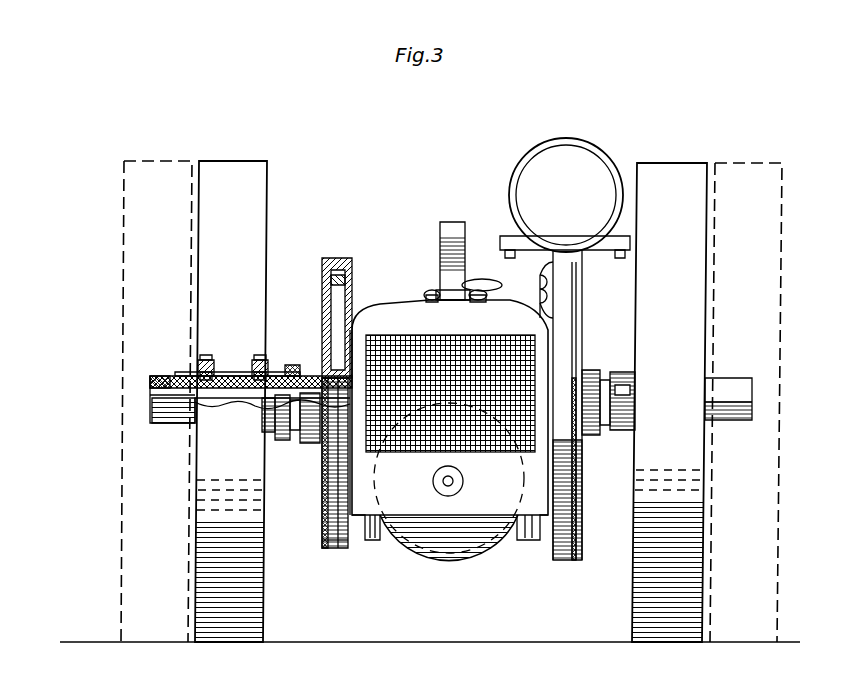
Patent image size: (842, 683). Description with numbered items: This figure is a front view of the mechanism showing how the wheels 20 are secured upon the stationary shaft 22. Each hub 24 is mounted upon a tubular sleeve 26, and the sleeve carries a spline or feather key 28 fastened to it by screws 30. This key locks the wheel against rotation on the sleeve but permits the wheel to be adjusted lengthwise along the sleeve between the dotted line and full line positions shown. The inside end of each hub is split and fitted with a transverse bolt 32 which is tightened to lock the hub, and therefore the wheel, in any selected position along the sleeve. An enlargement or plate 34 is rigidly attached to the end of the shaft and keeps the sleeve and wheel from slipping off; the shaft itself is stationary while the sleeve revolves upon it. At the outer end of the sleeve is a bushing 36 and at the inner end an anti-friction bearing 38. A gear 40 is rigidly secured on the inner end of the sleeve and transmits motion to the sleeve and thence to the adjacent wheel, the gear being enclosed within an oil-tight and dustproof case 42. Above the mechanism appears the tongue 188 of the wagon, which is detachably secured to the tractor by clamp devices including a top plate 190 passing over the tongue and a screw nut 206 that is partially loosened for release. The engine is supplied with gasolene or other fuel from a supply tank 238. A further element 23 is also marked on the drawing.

The wheel 20 is at (264, 607).
The shaft 22 is at (150, 393).
The mounting bar 23 is at (200, 368).
The hub 24 is at (262, 372).
The tubular sleeve 26 is at (228, 372).
The spline or feather key 28 is at (185, 376).
The screws 30 is at (158, 378).
The transverse bolt 32 is at (288, 440).
The enlargement or plate 34 is at (192, 402).
The bushing 36 is at (175, 425).
The anti-friction bearing 38 is at (345, 375).
The gear 40 is at (338, 262).
The case 42 is at (322, 275).
The tongue 188 is at (452, 222).
The top plate 190 is at (468, 297).
The screw nut 206 is at (430, 290).
The supply tank 238 is at (590, 160).